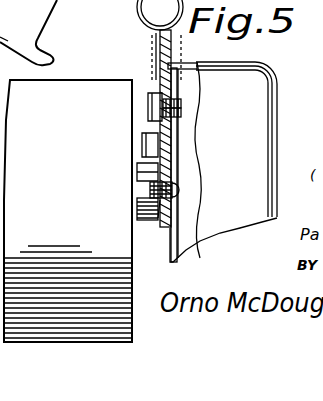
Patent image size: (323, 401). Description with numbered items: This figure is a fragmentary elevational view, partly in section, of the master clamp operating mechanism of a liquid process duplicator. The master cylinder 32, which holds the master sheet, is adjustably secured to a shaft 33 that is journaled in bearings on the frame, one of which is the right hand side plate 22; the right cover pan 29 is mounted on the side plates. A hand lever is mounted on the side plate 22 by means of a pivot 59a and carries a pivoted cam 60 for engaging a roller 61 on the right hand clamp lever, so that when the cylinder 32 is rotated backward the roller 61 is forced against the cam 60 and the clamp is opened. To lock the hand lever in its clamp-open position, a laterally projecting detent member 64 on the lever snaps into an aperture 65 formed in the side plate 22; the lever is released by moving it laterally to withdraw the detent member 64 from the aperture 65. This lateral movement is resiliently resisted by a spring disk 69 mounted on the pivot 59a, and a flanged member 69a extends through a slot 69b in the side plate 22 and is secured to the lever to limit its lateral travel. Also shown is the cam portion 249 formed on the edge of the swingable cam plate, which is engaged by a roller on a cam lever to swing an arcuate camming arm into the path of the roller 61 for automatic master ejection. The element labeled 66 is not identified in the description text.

The cam portion 249 is at (48, 12).
The master cylinder 32 is at (88, 80).
The aperture 65 is at (188, 64).
The detent member 64 is at (196, 78).
The flanged member 69a is at (182, 107).
The slot 69b is at (172, 124).
The side plate 22 is at (178, 148).
The cover pan 29 is at (273, 125).
The cam 60 is at (148, 112).
The block 66 is at (145, 148).
The roller 61 is at (142, 170).
The shaft 33 is at (143, 207).
The pivot 59a is at (180, 190).
The spring disk 69 is at (158, 218).